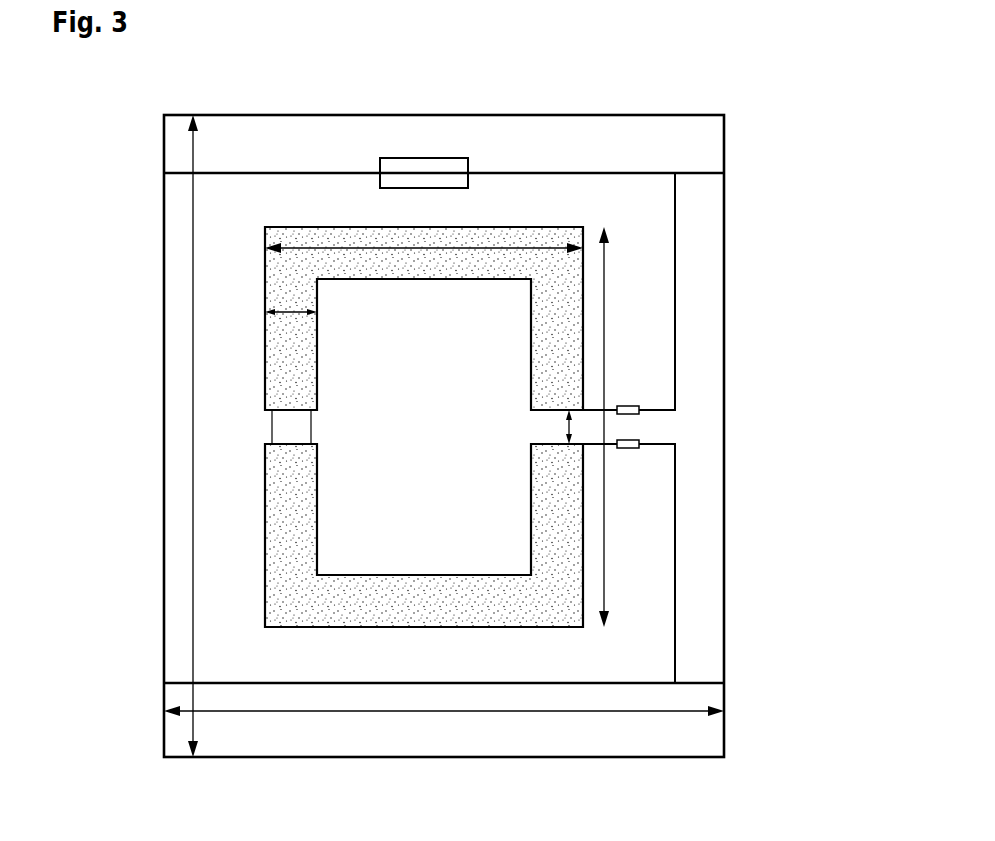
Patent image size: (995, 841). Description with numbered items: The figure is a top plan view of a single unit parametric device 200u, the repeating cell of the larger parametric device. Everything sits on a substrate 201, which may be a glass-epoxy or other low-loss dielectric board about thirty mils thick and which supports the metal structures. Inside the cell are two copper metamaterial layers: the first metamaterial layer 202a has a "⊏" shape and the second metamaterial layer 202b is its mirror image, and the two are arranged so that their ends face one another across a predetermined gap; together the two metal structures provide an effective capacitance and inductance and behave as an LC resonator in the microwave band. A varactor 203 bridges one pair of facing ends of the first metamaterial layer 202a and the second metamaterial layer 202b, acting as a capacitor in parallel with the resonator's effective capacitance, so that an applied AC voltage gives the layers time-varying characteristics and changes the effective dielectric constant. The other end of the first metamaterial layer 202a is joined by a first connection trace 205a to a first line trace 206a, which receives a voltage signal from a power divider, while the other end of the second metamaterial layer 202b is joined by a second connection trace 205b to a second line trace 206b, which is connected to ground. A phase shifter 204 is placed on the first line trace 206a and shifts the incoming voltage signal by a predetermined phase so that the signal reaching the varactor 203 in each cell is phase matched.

The unit parametric device 200u is at (744, 367).
The substrate 201 is at (164, 262).
The first metamaterial layer 202a is at (275, 378).
The second metamaterial layer 202b is at (275, 527).
The varactor 203 is at (272, 425).
The phase shifter 204 is at (437, 170).
The first connection trace 205a is at (675, 267).
The second connection trace 205b is at (675, 557).
The first line trace 206a is at (607, 173).
The second line trace 206b is at (607, 683).